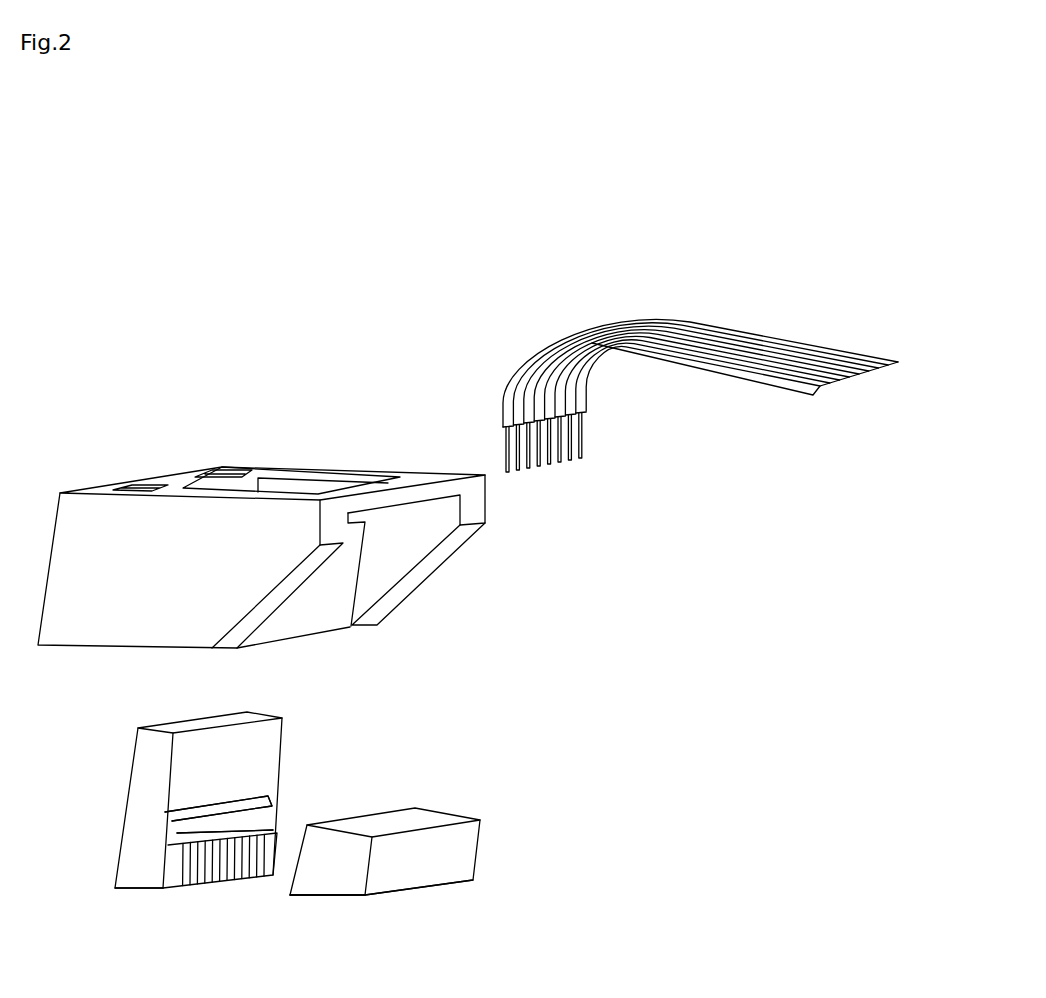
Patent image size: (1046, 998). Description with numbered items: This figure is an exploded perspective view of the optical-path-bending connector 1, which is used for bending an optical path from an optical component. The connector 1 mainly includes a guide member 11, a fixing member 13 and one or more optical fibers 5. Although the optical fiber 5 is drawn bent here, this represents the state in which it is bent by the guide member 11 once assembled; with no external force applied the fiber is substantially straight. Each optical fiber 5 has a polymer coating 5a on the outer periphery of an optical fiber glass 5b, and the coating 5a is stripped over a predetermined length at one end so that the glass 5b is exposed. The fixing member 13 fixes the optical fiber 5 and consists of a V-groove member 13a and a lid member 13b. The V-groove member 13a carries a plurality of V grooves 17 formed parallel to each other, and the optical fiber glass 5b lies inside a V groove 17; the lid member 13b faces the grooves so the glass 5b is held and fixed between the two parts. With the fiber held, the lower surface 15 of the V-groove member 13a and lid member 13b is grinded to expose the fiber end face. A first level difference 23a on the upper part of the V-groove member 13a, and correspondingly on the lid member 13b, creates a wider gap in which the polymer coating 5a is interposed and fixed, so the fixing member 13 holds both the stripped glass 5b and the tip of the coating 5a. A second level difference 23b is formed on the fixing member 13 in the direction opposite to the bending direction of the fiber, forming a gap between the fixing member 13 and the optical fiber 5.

The optical-path-bending connector 1 is at (276, 268).
The optical fiber 5 is at (672, 320).
The polymer coating 5a is at (587, 411).
The optical fiber glass 5b is at (577, 453).
The guide member 11 is at (178, 487).
The fixing member 13 is at (488, 785).
The V-groove member 13a is at (265, 745).
The lid member 13b is at (443, 783).
The lower surface 15 is at (145, 893).
The V groove 17 is at (195, 855).
The first level difference 23a is at (172, 840).
The second level difference 23b is at (165, 812).